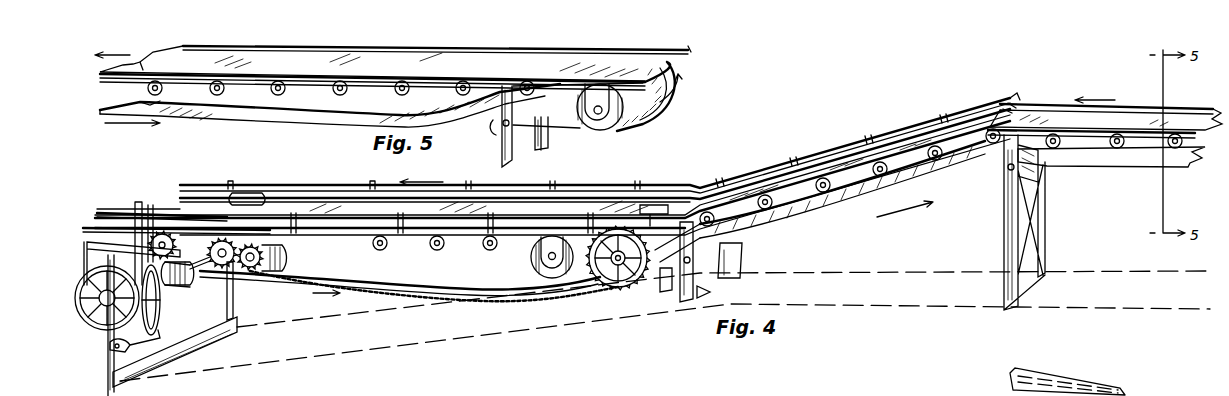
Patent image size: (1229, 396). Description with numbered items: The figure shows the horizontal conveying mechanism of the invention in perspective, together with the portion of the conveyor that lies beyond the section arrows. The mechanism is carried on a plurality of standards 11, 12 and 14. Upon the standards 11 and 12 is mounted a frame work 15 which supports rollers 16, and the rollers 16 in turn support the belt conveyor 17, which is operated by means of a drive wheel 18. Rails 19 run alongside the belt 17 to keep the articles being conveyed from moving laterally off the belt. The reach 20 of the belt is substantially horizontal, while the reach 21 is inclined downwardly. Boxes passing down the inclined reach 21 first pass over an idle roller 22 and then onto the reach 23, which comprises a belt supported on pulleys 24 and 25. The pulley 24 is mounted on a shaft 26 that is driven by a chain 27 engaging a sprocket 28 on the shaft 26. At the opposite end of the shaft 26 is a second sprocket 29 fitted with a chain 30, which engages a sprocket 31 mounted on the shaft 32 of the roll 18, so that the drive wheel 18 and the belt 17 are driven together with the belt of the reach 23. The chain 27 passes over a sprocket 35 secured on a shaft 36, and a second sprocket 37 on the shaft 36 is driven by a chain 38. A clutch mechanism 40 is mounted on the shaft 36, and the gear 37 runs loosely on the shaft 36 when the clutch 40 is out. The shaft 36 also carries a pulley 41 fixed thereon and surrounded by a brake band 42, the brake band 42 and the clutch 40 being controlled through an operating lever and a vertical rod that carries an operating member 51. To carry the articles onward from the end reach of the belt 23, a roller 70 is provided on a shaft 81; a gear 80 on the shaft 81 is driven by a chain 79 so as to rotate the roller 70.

In FIG. 4, the standard 11 is at (1045, 232).
In FIG. 4, the standard 12 is at (684, 305).
In FIG. 4, the standard 14 is at (108, 372).
In FIG. 4, the frame work 15 is at (972, 113).
In FIG. 5, the rollers 16 is at (408, 92).
In FIG. 4, the rollers 16 is at (775, 204).
In FIG. 5, the belt conveyor 17 is at (540, 62).
In FIG. 4, the belt conveyor 17 is at (1190, 118).
In FIG. 4, the drive wheel 18 is at (660, 290).
In FIG. 5, the rails 19 is at (632, 53).
In FIG. 4, the rails 19 is at (906, 136).
In FIG. 4, the reach 20 is at (1058, 120).
In FIG. 4, the reach 21 is at (808, 178).
In FIG. 4, the idle roller 22 is at (645, 212).
In FIG. 4, the reach 23 is at (522, 210).
In FIG. 4, the pulley 24 is at (283, 280).
In FIG. 4, the pulley 25 is at (552, 280).
In FIG. 4, the shaft 26 is at (266, 274).
In FIG. 4, the chain 27 is at (293, 214).
In FIG. 4, the sprocket 28 is at (338, 192).
In FIG. 4, the second sprocket 29 is at (247, 270).
In FIG. 4, the chain 30 is at (490, 300).
In FIG. 4, the sprocket 31 is at (613, 290).
In FIG. 4, the shaft 32 is at (624, 300).
In FIG. 4, the sprocket 35 is at (221, 268).
In FIG. 4, the shaft 36 is at (205, 275).
In FIG. 4, the second sprocket 37 is at (208, 272).
In FIG. 4, the chain 38 is at (82, 250).
In FIG. 4, the clutch mechanism 40 is at (165, 290).
In FIG. 4, the pulley 41 is at (95, 323).
In FIG. 4, the brake band 42 is at (158, 327).
In FIG. 4, the operating member 51 is at (139, 208).
In FIG. 4, the roller 70 is at (248, 186).
In FIG. 4, the chain 79 is at (122, 226).
In FIG. 4, the gear 80 is at (160, 233).
In FIG. 4, the shaft 81 is at (168, 237).